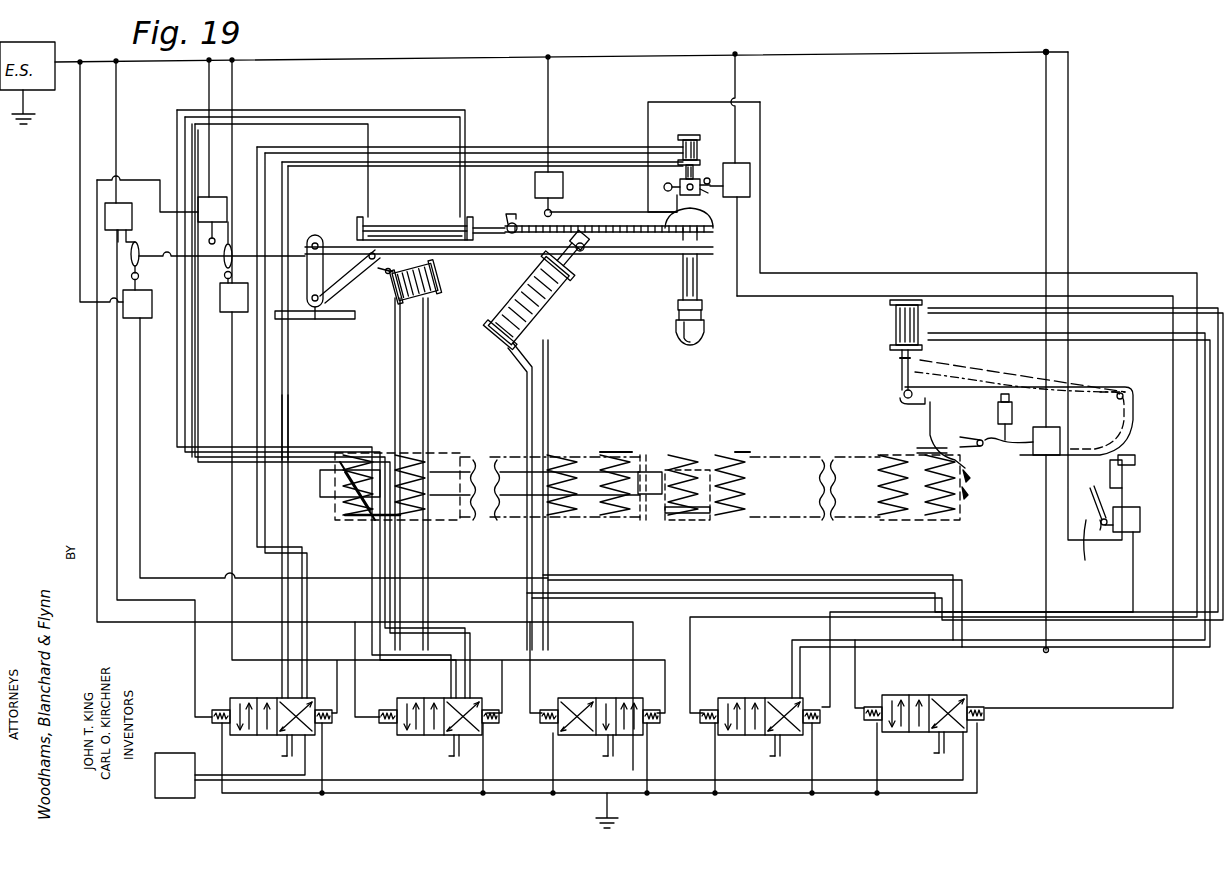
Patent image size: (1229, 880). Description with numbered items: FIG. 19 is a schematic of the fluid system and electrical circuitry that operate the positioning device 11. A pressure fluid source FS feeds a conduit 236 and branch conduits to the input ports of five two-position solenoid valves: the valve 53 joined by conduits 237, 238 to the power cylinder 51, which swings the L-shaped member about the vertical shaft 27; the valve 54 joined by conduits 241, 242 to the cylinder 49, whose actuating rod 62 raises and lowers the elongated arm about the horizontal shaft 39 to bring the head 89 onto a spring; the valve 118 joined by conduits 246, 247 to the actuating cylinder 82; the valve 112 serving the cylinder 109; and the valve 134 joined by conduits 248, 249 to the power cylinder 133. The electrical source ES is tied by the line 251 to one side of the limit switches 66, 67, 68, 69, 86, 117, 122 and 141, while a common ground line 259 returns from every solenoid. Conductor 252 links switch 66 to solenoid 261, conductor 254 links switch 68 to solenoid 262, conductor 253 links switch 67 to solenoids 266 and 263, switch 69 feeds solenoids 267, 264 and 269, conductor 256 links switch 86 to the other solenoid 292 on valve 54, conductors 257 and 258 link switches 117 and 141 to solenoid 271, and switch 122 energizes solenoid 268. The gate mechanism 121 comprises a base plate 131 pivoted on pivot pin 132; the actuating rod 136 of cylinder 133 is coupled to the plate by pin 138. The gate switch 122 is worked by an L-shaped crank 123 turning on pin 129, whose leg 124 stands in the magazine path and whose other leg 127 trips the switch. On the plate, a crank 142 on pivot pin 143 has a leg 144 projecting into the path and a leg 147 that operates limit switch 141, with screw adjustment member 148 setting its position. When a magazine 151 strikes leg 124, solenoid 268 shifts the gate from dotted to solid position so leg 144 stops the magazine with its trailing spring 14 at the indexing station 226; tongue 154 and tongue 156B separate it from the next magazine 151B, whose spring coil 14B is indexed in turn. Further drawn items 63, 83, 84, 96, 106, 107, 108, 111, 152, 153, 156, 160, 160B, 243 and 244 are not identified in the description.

The line 251 is at (417, 56).
The actuating cylinder 82 is at (692, 150).
The limit switch 117 is at (536, 188).
The rack 107 is at (602, 226).
The switch plunger 83 is at (686, 171).
The limit switch 86 is at (748, 180).
The rod 108 is at (486, 228).
The cylinder 109 is at (412, 226).
The pawl 111 is at (520, 204).
The switch block 84 is at (696, 196).
The shaft 39 is at (316, 235).
The limit switch 66 is at (105, 215).
The limit switch 67 is at (205, 214).
The link 63 is at (165, 266).
The limit switch 68 is at (140, 312).
The limit switch 69 is at (222, 306).
The shaft 27 is at (315, 320).
The actuating rod 62 is at (387, 276).
The power cylinder 51 is at (432, 276).
The cylinder 49 is at (540, 286).
The positioning device 11 is at (622, 262).
The dome 106 is at (672, 245).
The plunger 96 is at (680, 308).
The head 89 is at (660, 328).
The power cylinder 133 is at (896, 325).
The gate mechanism 121 is at (1019, 366).
The actuating rod 136 is at (902, 360).
The pin 138 is at (902, 390).
The base plate 131 is at (972, 387).
The screw type adjustment member 148 is at (1012, 418).
The leg 147 is at (992, 437).
The crank 142 is at (978, 442).
The pivot pin 132 is at (1118, 398).
The spring 152 is at (880, 452).
The pivot pin 143 is at (928, 420).
The leg 144 is at (920, 449).
The limit switch 141 is at (1040, 455).
The stop 156 is at (1128, 460).
The leg 124 is at (1095, 296).
The gate switch 122 is at (1128, 507).
The finger 153 is at (968, 482).
The magazine 151 is at (968, 500).
The L-shaped crank 123 is at (1092, 525).
The leg 127 is at (1104, 532).
The pin 129 is at (1085, 560).
The conductor 256 is at (1173, 588).
The conductor 258 is at (1046, 585).
The conduit 248 is at (1115, 612).
The conduit 249 is at (1120, 642).
The conductor 257 is at (1207, 650).
The conduit 246 is at (258, 372).
The line 243 is at (182, 390).
The line 244 is at (208, 385).
The conduit 247 is at (284, 395).
The conduit 237 is at (395, 394).
The conduit 238 is at (428, 394).
The conduit 241 is at (527, 425).
The conduit 242 is at (549, 425).
The tongue 156B is at (638, 455).
The spring 160B is at (436, 458).
The indexing station 226 is at (700, 445).
The spring 160 is at (742, 446).
The conductor 252 is at (112, 392).
The conductor 253 is at (97, 442).
The conductor 254 is at (140, 505).
The magazine 151B is at (340, 506).
The spring coil 14B is at (348, 518).
The tongue 154 is at (655, 495).
The spring 14 is at (688, 515).
The solenoid 261 is at (218, 710).
The solenoid 262 is at (324, 710).
The solenoid 263 is at (385, 710).
The solenoid 264 is at (490, 710).
The solenoid 266 is at (547, 710).
The solenoid 267 is at (650, 710).
The solenoid 268 is at (709, 710).
The solenoid 269 is at (812, 710).
The solenoid 271 is at (872, 708).
The solenoid 292 is at (977, 708).
The valve 118 is at (253, 738).
The valve 112 is at (420, 738).
The valve 53 is at (580, 738).
The valve 134 is at (742, 738).
The valve 54 is at (906, 735).
The conduit 236 is at (535, 795).
The common ground line 259 is at (745, 795).